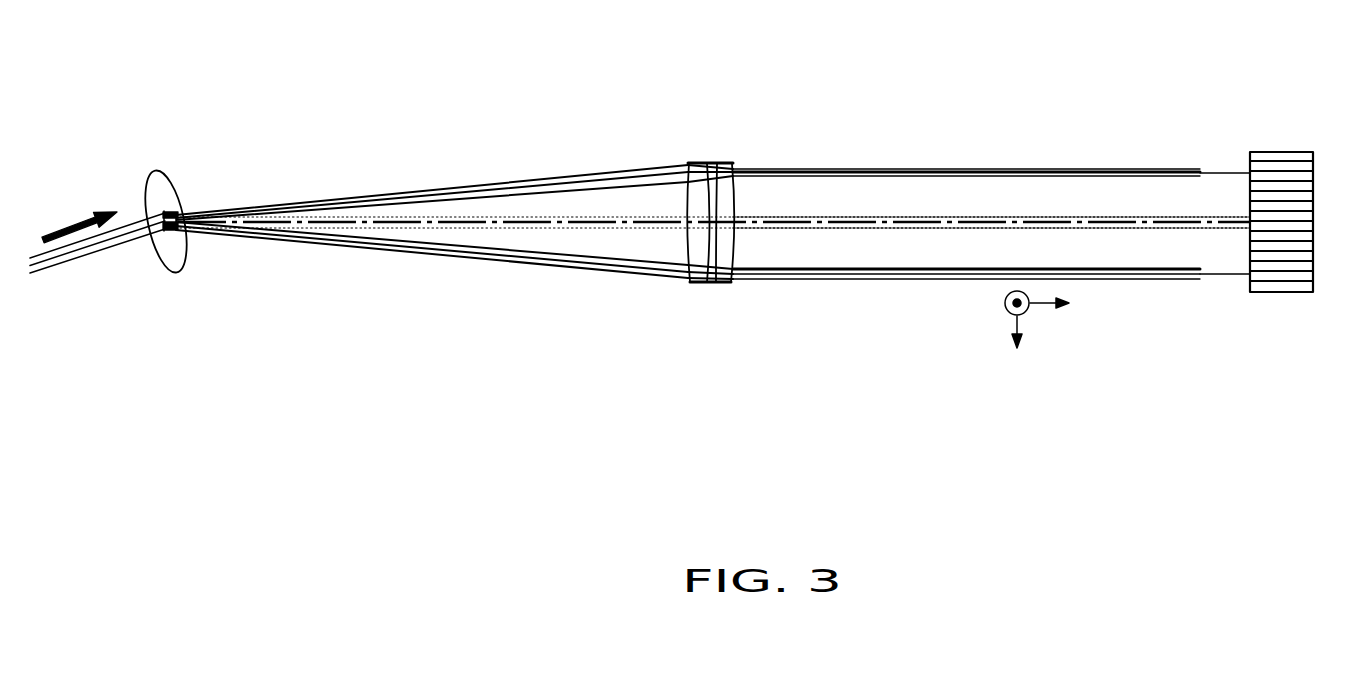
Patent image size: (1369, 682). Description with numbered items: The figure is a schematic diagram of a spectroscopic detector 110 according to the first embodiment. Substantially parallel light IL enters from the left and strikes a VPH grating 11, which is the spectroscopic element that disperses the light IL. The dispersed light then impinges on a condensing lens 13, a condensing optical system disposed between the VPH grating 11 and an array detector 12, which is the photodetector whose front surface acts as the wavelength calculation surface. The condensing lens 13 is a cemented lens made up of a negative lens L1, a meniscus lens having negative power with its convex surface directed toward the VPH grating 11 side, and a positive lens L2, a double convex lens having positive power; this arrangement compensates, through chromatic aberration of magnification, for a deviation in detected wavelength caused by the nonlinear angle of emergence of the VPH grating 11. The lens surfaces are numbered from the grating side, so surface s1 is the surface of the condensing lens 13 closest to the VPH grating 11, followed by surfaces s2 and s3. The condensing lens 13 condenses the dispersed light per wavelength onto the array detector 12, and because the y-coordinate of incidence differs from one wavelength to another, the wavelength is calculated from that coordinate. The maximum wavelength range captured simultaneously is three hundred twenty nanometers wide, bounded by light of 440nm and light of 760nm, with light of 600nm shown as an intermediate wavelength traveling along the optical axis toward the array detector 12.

The spectroscopic detector 110 is at (102, 99).
The light IL is at (60, 260).
The VPH grating 11 is at (170, 188).
The condensing lens 13 is at (750, 411).
The negative lens L1 is at (697, 285).
The positive lens L2 is at (720, 285).
The surface number s1 is at (676, 166).
The surface number s2 is at (699, 166).
The surface number s3 is at (737, 166).
The 440 nm light 440nm is at (870, 168).
The 600 nm light 600nm is at (947, 222).
The 760 nm light 760nm is at (898, 278).
The array detector 12 is at (1283, 292).